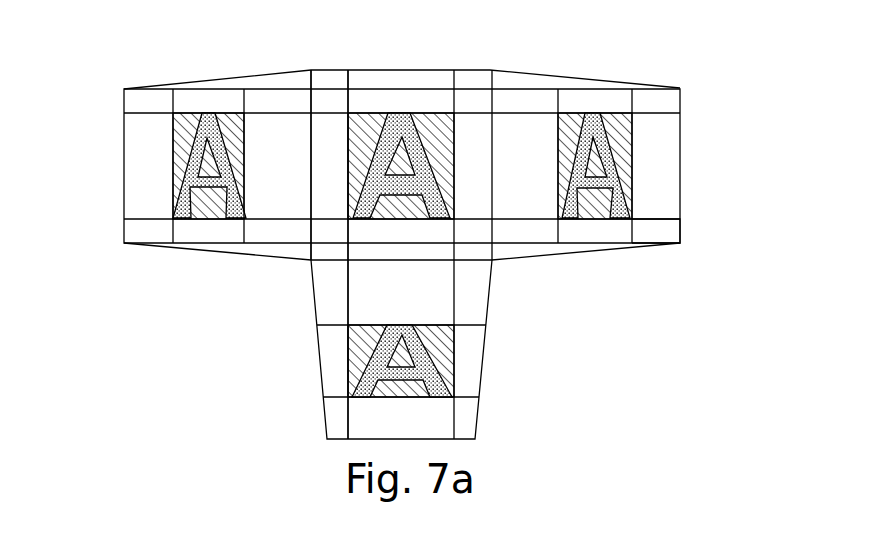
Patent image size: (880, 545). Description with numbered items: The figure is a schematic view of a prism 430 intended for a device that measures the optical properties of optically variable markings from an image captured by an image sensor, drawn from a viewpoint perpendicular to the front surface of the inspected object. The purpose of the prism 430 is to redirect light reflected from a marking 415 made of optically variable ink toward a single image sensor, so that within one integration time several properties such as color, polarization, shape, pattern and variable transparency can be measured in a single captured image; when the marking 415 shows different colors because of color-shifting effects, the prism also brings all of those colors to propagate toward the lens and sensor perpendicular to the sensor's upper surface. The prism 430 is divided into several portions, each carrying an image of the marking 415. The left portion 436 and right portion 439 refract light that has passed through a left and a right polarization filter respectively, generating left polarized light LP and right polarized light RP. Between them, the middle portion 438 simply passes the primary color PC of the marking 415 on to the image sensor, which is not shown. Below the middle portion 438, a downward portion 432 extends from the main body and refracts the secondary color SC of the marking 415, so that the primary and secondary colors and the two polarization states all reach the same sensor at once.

The prism 430 is at (115, 100).
The downward portion 432 is at (458, 415).
The left portion 436 is at (218, 221).
The middle portion 438 is at (350, 97).
The right portion 439 is at (645, 222).
The marking 415 is at (397, 113).
The left polarized light LP is at (232, 118).
The primary color PC is at (442, 130).
The right polarized light RP is at (622, 125).
The secondary color SC is at (437, 335).